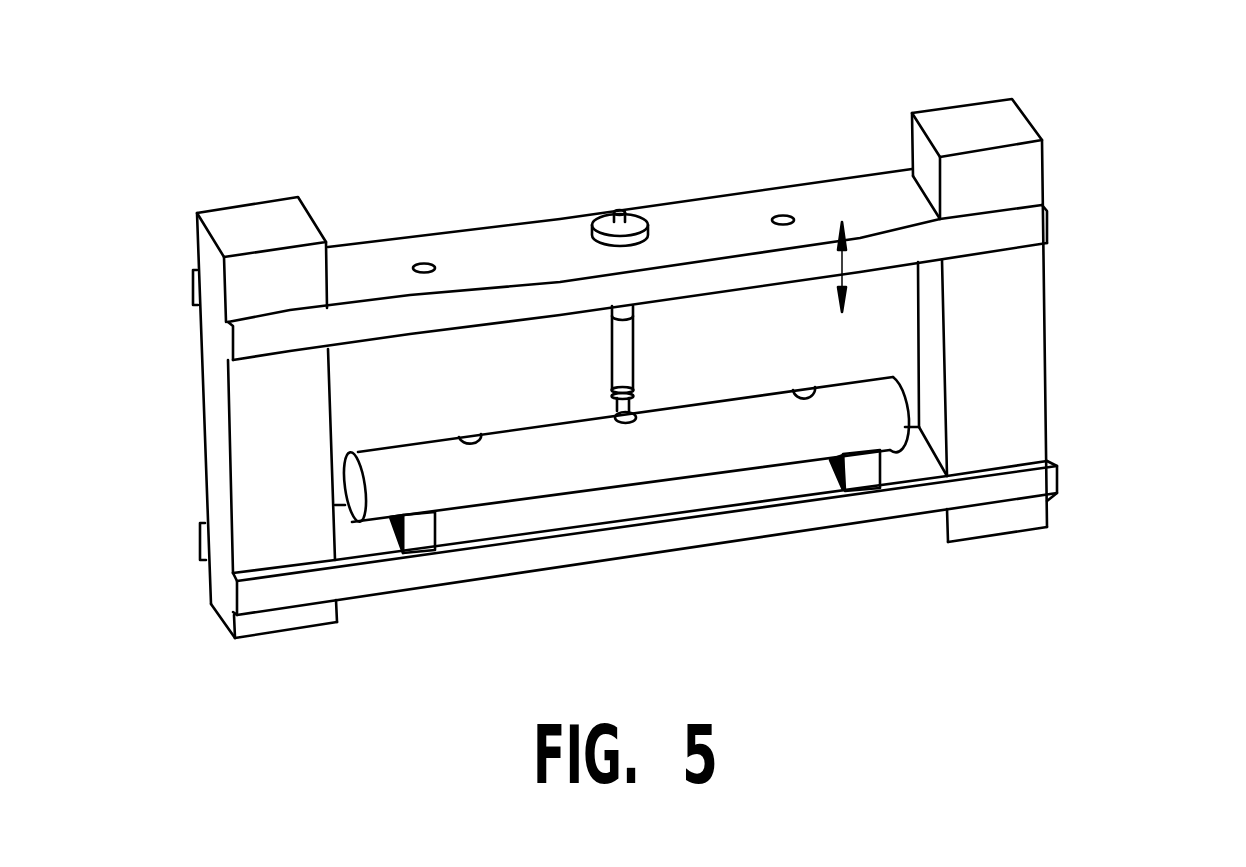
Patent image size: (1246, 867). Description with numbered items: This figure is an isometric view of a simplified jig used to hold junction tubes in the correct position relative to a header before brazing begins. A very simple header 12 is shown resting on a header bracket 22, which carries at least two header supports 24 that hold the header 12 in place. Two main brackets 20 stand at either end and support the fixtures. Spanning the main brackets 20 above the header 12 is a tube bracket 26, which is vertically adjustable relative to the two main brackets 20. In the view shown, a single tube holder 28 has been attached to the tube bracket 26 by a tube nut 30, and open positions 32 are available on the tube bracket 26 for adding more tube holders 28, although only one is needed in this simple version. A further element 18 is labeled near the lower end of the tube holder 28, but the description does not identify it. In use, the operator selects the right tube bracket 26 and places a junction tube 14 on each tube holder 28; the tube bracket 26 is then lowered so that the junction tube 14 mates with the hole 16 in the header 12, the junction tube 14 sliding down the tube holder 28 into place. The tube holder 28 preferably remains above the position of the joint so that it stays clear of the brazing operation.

The header 12 is at (624, 529).
The junction tube 14 is at (675, 348).
The hole 16 is at (662, 525).
The collar 18 is at (613, 391).
The main bracket 20 is at (642, 368).
The header bracket 22 is at (645, 546).
The header support 24 is at (699, 529).
The tube bracket 26 is at (637, 189).
The tube holder 28 is at (703, 378).
The tube nut 30 is at (655, 162).
The open position 32 is at (547, 171).